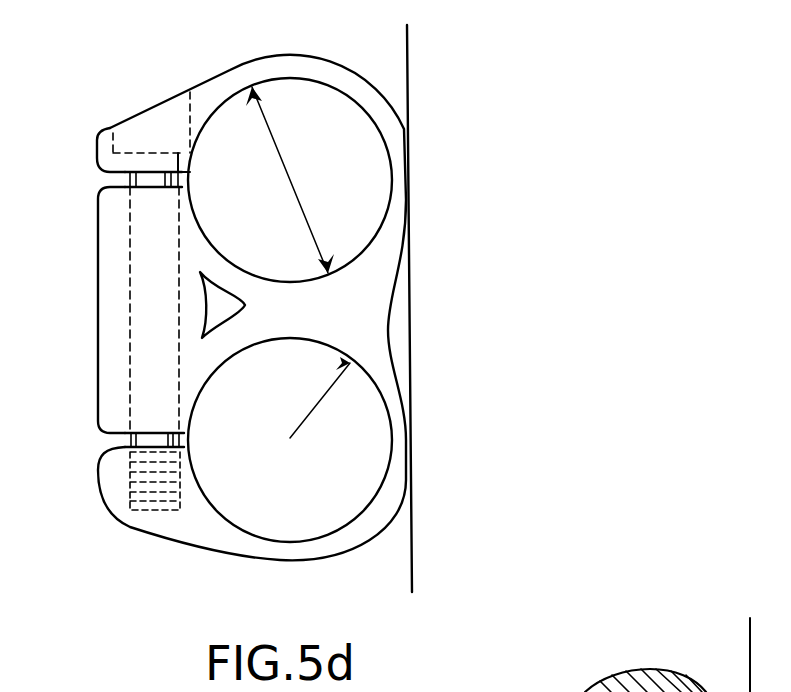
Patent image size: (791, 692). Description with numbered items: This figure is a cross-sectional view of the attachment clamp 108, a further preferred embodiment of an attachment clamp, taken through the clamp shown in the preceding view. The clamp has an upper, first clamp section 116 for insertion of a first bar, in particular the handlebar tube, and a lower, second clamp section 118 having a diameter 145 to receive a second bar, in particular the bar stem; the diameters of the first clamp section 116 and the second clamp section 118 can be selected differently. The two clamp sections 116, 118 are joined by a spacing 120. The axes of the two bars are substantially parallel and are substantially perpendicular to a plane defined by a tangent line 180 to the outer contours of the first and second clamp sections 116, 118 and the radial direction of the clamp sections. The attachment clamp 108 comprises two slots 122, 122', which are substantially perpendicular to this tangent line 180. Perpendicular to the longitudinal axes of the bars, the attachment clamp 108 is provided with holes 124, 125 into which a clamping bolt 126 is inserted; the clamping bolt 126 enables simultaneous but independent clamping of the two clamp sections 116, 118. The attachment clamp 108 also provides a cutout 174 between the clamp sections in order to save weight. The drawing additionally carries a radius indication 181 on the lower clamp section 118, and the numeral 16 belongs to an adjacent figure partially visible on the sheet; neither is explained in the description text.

The attachment clamp 108 is at (443, 44).
The first clamp section 116 is at (386, 160).
The second clamp section 118 is at (343, 508).
The spacing 120 is at (380, 340).
The slot 122 is at (106, 187).
The slot 122' is at (102, 447).
The hole 124 is at (130, 495).
The hole 125 is at (128, 282).
The clamping bolt 126 is at (150, 120).
The diameter 145 is at (288, 169).
The cutout 174 is at (220, 312).
The tangent line 180 is at (410, 548).
The lobe radius 181 is at (303, 428).
The tube (adjacent figure) 16 is at (683, 680).